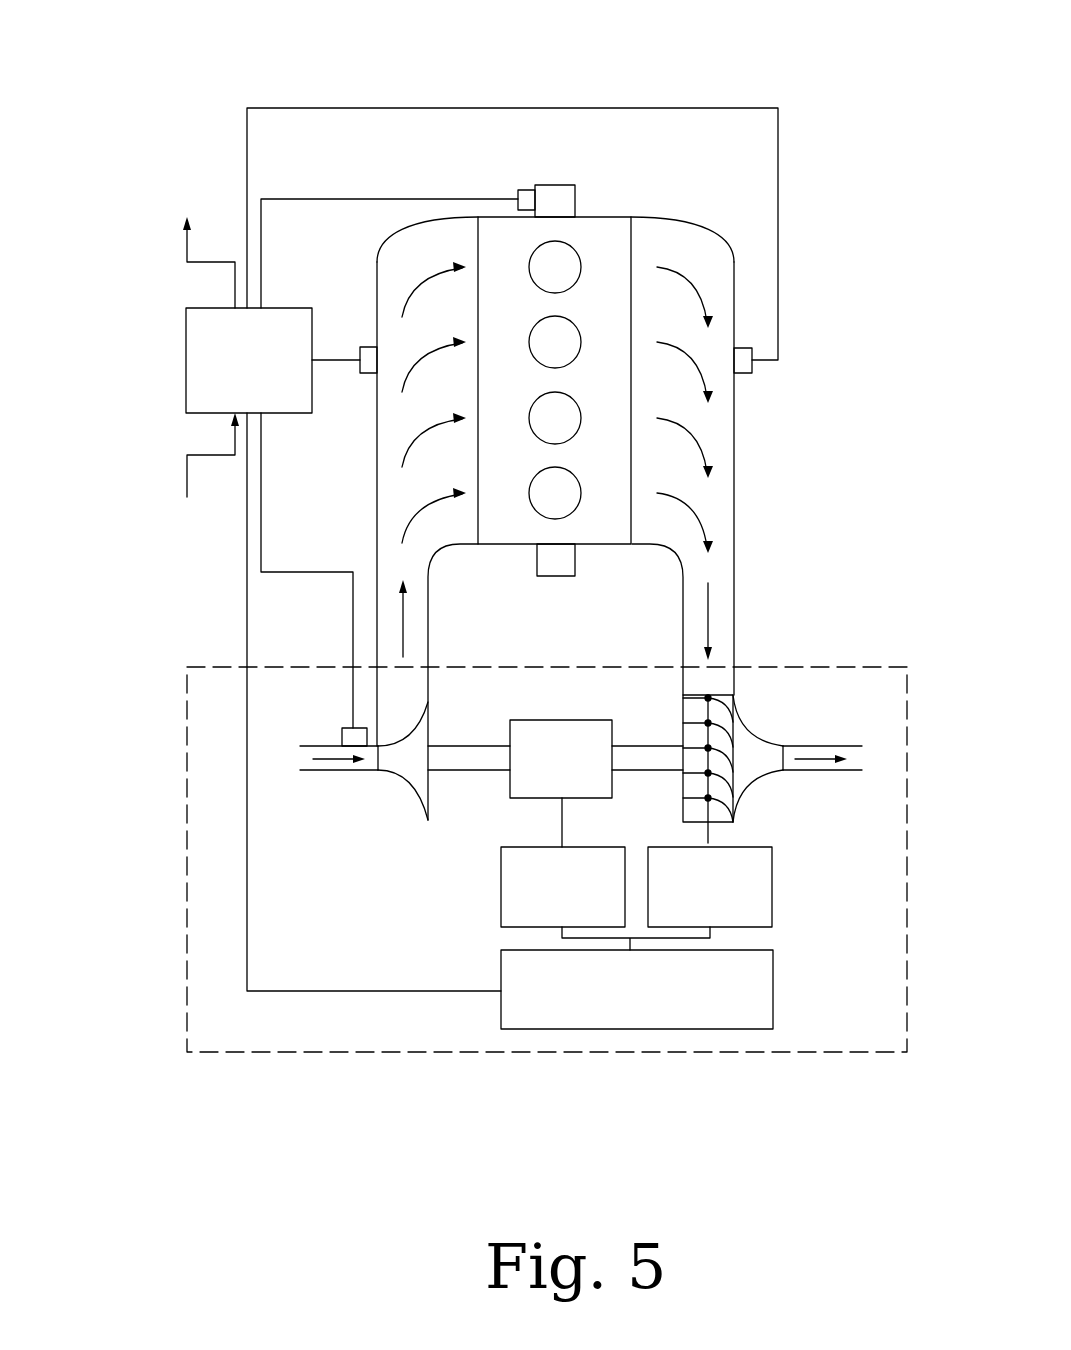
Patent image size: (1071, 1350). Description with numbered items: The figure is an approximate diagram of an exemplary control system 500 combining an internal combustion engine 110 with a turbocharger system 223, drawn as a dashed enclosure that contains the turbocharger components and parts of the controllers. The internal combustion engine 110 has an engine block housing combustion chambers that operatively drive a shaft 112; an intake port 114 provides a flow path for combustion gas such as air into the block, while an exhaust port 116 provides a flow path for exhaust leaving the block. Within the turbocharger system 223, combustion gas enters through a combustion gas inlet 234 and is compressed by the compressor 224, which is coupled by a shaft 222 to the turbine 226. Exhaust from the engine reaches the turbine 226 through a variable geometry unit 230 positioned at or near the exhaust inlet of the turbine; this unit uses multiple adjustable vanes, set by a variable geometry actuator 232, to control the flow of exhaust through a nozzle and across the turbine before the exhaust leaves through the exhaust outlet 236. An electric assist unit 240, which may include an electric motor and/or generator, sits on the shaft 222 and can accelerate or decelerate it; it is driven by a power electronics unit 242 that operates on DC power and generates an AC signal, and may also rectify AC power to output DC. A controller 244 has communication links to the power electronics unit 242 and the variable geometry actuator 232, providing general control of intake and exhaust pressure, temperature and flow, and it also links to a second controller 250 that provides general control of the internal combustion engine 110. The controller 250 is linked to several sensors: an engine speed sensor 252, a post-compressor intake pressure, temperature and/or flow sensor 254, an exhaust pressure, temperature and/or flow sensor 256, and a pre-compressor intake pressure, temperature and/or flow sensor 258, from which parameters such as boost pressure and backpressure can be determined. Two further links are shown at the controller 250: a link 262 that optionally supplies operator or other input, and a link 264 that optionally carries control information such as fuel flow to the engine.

The engine system 500 is at (669, 48).
The internal combustion engine 110 is at (599, 215).
The shaft 112 is at (553, 185).
The intake port 114 is at (378, 253).
The exhaust port 116 is at (673, 220).
The shaft 222 is at (477, 772).
The turbocharger system 223 is at (787, 665).
The compressor 224 is at (430, 723).
The turbine 226 is at (742, 720).
The variable geometry unit 230 is at (683, 722).
The variable geometry actuator 232 is at (710, 887).
The combustion gas inlet 234 is at (338, 772).
The exhaust outlet 236 is at (810, 745).
The electric assist unit 240 is at (561, 759).
The power electronics unit 242 is at (563, 887).
The controller 244 is at (637, 989).
The controller 250 is at (249, 360).
The engine speed sensor 252 is at (517, 188).
The intake manifold sensor 254 is at (361, 347).
The exhaust pressure, temperature, and/or flow sensor 256 is at (752, 373).
The pre-compressor intake pressure, temperature, and/or flow sensor 258 is at (340, 728).
The link 262 is at (187, 455).
The link 264 is at (187, 263).